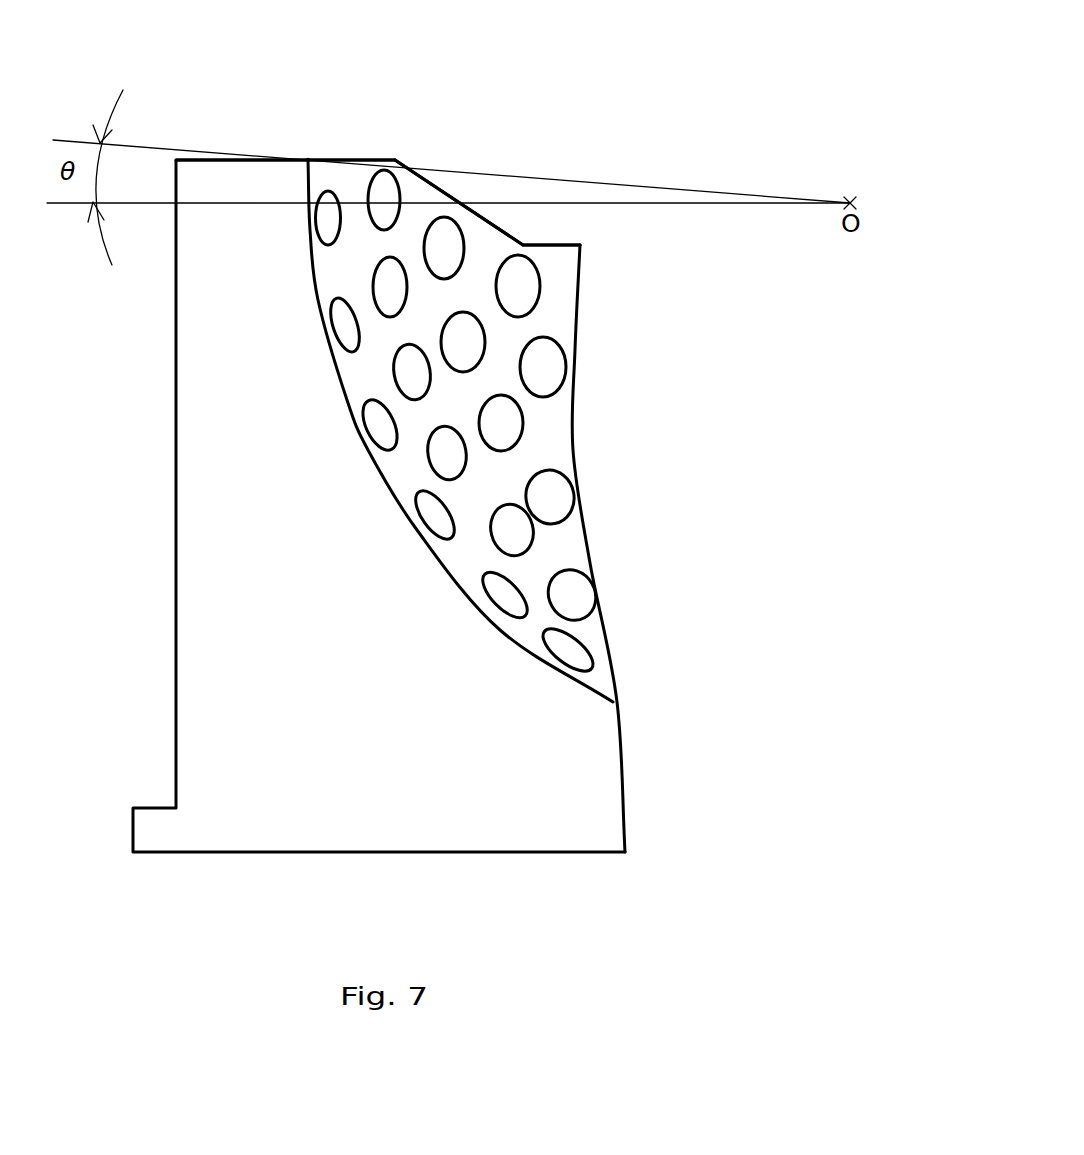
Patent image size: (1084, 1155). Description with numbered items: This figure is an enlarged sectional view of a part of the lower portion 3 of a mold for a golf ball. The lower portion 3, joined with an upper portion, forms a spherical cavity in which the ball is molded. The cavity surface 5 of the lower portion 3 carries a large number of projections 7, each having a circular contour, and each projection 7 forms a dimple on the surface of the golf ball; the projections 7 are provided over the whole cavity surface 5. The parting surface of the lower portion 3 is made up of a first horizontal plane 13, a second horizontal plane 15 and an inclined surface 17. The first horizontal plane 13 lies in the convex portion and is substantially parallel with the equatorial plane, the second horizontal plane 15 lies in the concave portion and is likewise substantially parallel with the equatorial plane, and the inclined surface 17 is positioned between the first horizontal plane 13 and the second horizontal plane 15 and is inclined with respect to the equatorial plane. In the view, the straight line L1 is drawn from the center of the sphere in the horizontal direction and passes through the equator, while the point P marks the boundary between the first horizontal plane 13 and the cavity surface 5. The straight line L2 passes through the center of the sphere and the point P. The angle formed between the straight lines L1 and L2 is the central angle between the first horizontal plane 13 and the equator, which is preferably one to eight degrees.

The lower portion 3 is at (434, 437).
The cavity surface 5 is at (590, 687).
The projections 7 is at (513, 422).
The first horizontal plane 13 is at (223, 152).
The second horizontal plane 15 is at (565, 242).
The inclined surface 17 is at (507, 232).
The straight line L1 is at (150, 205).
The straight line L2 is at (145, 140).
The boundary point P is at (308, 160).